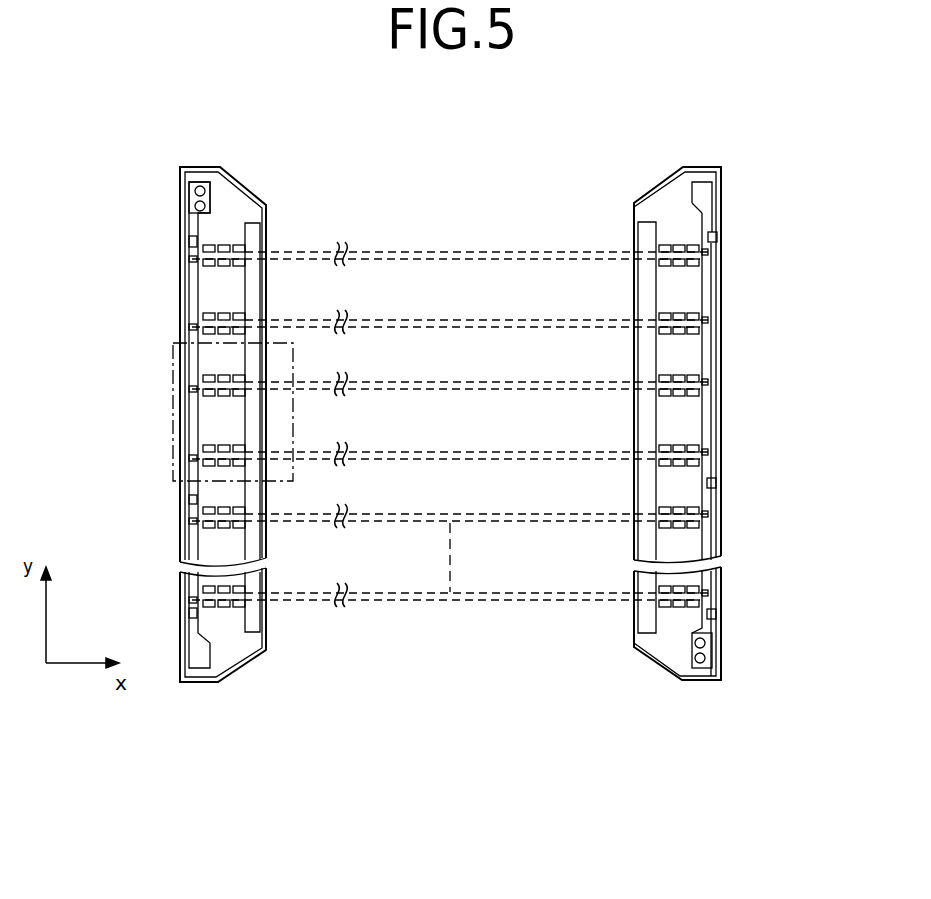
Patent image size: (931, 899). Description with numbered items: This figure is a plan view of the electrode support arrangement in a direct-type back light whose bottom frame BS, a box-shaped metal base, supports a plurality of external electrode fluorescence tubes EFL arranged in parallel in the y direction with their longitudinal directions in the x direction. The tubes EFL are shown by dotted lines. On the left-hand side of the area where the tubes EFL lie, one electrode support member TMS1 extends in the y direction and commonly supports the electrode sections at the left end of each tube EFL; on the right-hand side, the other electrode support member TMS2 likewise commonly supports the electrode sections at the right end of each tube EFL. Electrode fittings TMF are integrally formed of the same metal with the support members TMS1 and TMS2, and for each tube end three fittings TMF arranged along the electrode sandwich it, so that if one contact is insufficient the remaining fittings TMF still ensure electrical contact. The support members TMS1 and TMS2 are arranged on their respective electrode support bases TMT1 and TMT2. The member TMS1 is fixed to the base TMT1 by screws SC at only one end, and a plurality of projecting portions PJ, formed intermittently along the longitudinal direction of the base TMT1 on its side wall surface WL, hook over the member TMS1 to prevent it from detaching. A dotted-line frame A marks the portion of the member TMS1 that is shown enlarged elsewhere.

The electrode support base TMT1 is at (227, 642).
The electrode support base TMT2 is at (665, 642).
The electrode support member TMS1 is at (193, 400).
The electrode support member TMS2 is at (724, 435).
The electrode fitting TMF is at (658, 247).
The screw SC is at (193, 205).
The projecting portion PJ is at (190, 240).
The side wall surface WL is at (185, 290).
The dotted-line frame A is at (246, 412).
The external electrode fluorescence tube EFL is at (428, 320).
The bottom frame BS is at (386, 632).